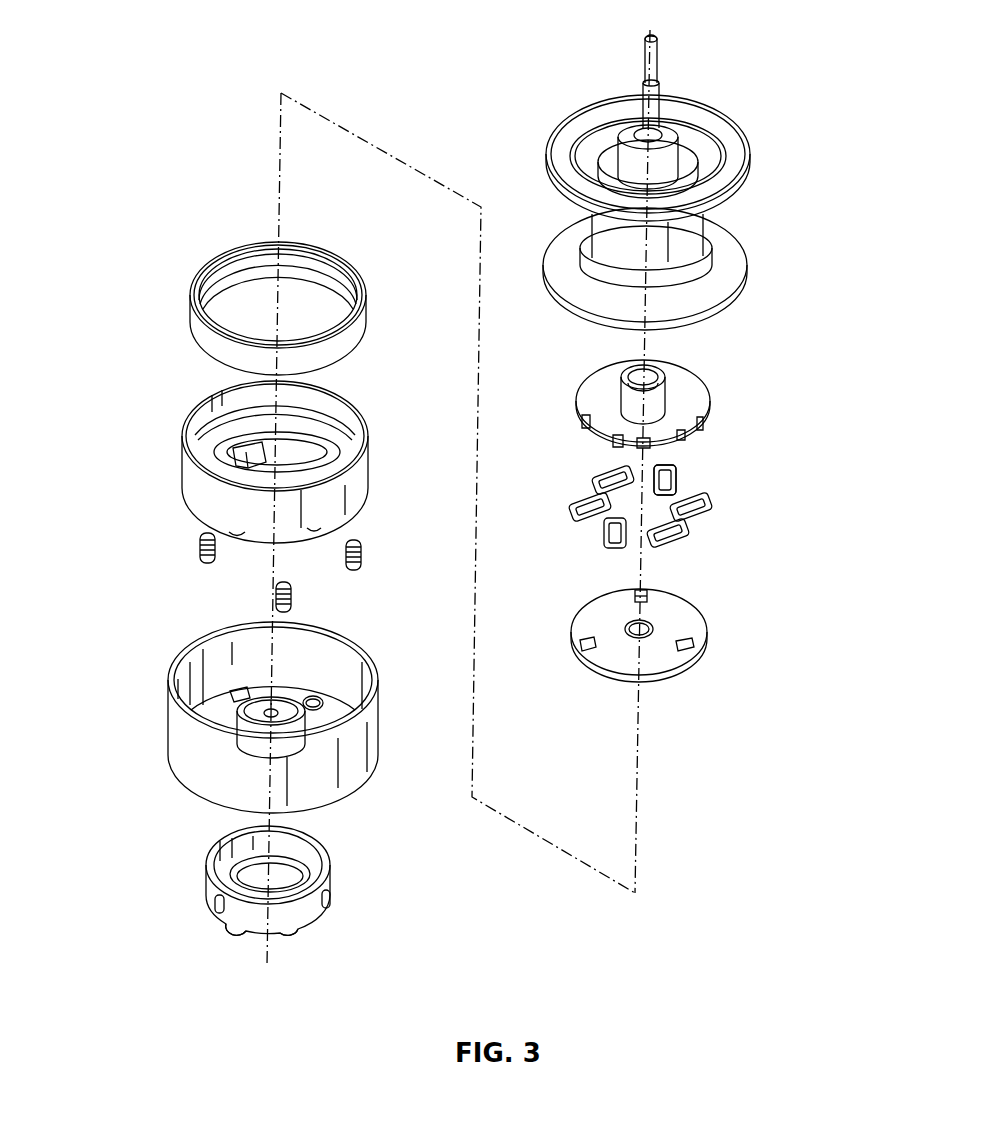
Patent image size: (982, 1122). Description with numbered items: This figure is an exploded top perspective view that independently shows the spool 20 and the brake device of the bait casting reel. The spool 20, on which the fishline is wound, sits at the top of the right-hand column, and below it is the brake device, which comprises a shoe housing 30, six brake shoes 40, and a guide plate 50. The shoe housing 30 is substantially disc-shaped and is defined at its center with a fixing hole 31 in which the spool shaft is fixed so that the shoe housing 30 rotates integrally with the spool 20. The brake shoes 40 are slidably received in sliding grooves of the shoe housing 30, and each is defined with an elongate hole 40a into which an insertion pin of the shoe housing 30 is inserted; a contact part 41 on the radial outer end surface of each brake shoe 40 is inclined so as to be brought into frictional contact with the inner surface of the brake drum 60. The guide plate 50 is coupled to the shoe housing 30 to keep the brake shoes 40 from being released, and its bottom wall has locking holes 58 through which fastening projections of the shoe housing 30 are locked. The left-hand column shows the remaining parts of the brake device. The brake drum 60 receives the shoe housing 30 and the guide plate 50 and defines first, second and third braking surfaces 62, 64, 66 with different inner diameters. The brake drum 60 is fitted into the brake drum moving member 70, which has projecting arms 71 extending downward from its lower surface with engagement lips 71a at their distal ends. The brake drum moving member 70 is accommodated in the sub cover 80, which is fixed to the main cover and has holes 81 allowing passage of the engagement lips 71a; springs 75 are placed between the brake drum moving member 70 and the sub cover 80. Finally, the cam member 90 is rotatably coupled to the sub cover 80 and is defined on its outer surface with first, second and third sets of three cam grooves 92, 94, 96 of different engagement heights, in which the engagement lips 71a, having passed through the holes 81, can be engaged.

The spool 20 is at (765, 208).
The shoe housing 30 is at (738, 408).
The fixing hole 31 is at (660, 380).
The brake shoes 40 is at (735, 529).
The elongate holes 40a is at (654, 480).
The contact part 41 is at (712, 505).
The guide plate 50 is at (740, 637).
The locking holes 58 is at (697, 628).
The brake drum 60 is at (165, 308).
The first braking surface 62 is at (330, 250).
The second braking surface 64 is at (355, 268).
The third braking surface 66 is at (364, 292).
The brake drum moving member 70 is at (150, 449).
The projecting arms 71 is at (292, 448).
The engagement lips 71a is at (340, 478).
The springs 75 is at (198, 548).
The sub cover 80 is at (145, 714).
The holes 81 is at (240, 690).
The cam member 90 is at (183, 881).
The first set of cam grooves 92 is at (236, 933).
The second set of cam grooves 94 is at (300, 925).
The third set of cam grooves 96 is at (331, 896).